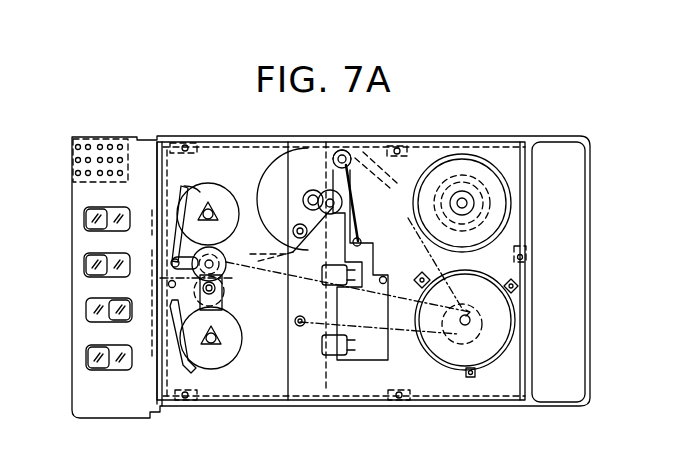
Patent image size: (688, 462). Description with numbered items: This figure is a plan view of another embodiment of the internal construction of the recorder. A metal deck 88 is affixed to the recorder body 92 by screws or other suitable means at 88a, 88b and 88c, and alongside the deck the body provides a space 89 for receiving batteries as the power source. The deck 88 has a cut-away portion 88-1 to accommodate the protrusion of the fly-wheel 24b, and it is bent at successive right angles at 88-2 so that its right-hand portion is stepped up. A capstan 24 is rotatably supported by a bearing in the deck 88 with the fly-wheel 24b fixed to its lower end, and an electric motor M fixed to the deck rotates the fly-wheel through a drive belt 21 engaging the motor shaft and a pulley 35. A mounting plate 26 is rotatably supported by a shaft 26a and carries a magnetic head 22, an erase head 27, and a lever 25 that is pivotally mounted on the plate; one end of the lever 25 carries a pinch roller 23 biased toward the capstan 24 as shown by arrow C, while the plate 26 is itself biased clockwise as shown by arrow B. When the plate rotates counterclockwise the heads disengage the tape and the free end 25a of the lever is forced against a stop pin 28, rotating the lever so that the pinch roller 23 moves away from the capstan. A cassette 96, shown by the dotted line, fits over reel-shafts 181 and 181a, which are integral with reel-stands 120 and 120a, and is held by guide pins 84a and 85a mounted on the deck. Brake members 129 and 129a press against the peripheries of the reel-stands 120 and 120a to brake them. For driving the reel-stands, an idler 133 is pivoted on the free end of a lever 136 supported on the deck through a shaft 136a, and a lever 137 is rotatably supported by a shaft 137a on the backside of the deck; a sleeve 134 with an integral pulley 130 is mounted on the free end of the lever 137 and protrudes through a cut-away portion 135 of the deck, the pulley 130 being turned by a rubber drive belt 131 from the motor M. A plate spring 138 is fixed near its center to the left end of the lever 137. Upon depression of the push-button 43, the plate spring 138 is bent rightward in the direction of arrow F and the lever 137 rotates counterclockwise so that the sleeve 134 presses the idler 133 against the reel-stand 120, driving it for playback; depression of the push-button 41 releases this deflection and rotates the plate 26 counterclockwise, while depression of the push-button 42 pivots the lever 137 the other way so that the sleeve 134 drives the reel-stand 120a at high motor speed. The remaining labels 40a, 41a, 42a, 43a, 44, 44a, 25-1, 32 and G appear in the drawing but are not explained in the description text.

The metal deck 88 is at (345, 405).
The space 89 is at (568, 290).
The cut-away portion 88-1 is at (288, 165).
The bend 88-2 is at (292, 388).
The screw point 88a is at (196, 146).
The screw point 88b is at (412, 150).
The screw point 88c is at (527, 250).
The cassette 96 is at (163, 150).
The recorder body 92 is at (395, 146).
The speaker grille 40a is at (130, 140).
The push-button 41 is at (84, 220).
The switch button 41a is at (82, 210).
The push-button 42 is at (84, 266).
The switch button 42a is at (84, 262).
The push-button 43 is at (87, 308).
The switch button 43a is at (90, 324).
The switch 44 is at (88, 357).
The switch button 44a is at (117, 370).
The plate spring 138 is at (160, 280).
The shaft 137a is at (153, 287).
The lever 137 is at (149, 324).
The lever 136 is at (152, 240).
The shaft 136a is at (150, 217).
The reel-stand 120 is at (231, 191).
The reel-stand 120a is at (240, 357).
The reel-shaft 181 is at (212, 207).
The reel-shaft 181a is at (212, 345).
The brake member 129 is at (200, 178).
The brake member 129a is at (182, 360).
The idler 133 is at (232, 252).
The pulley 130 is at (222, 288).
The rubber drive belt 131 is at (232, 268).
The sleeve 134 is at (222, 296).
The cut-away portion 135 is at (233, 308).
The guide pin 85a is at (296, 328).
The guide pin 84a is at (294, 226).
The capstan 24 is at (310, 192).
The fly-wheel 24b is at (328, 190).
The lever 25 is at (370, 194).
The link arm 25-1 is at (358, 222).
The free end 25a is at (352, 290).
The mounting plate 26 is at (400, 370).
The shaft 26a is at (349, 152).
The drive belt 21 is at (397, 156).
The magnetic head 22 is at (310, 312).
The pinch roller 23 is at (322, 274).
The erase head 27 is at (350, 341).
The stop pin 28 is at (386, 280).
The drive wheel 32 is at (495, 178).
The pulley 35 is at (466, 314).
The arrow B is at (352, 180).
The arrow C is at (374, 250).
The arrow F is at (150, 313).
The direction G is at (152, 351).
The electric motor M is at (487, 367).